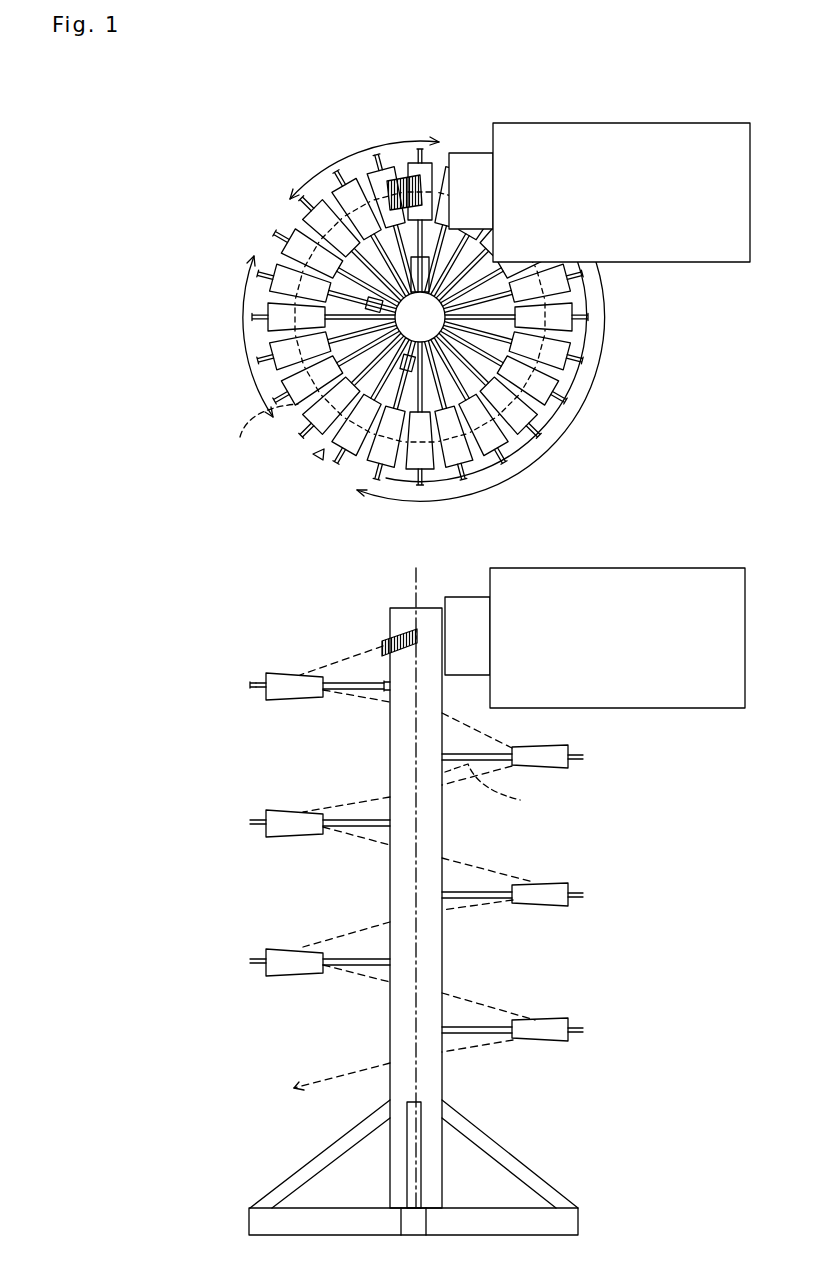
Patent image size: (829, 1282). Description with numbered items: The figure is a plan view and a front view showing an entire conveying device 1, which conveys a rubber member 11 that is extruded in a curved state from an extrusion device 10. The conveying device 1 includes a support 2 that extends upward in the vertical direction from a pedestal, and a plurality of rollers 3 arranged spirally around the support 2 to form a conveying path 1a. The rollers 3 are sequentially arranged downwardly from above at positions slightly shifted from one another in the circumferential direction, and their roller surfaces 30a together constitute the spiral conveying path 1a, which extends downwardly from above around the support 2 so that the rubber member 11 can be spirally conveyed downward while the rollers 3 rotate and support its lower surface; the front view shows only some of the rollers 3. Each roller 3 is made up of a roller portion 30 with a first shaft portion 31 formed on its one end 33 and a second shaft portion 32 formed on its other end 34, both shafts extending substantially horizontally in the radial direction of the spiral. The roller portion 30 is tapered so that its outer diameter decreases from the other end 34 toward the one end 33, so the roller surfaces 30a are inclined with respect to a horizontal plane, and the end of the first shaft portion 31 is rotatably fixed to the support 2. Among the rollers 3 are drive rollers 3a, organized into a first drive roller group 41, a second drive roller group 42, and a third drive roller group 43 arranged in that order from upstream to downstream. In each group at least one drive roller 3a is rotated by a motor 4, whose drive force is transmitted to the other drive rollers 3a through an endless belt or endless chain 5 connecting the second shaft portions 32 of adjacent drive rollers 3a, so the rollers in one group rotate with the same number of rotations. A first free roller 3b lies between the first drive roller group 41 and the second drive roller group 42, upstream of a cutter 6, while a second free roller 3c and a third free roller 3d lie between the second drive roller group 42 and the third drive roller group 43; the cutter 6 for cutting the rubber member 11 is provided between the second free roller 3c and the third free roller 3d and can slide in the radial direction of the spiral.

The conveying device 1 is at (602, 399).
The conveying path 1a is at (381, 613).
The support 2 is at (545, 392).
The rollers 3 is at (263, 293).
The drive roller 3a is at (388, 476).
The first free roller 3b is at (299, 233).
The second free roller 3c is at (299, 430).
The third free roller 3d is at (347, 462).
The motor 4 is at (421, 322).
The endless belt or endless chain 5 is at (468, 472).
The cutter 6 is at (321, 453).
The extrusion device 10 is at (677, 275).
The rubber member 11 is at (398, 172).
The roller portion 30 is at (296, 700).
The roller surfaces 30a is at (290, 272).
The first shaft portion 31 is at (355, 690).
The second shaft portion 32 is at (262, 690).
The one end 33 is at (388, 692).
The other end 34 is at (251, 688).
The first drive roller group 41 is at (364, 163).
The second drive roller group 42 is at (244, 336).
The third drive roller group 43 is at (481, 381).